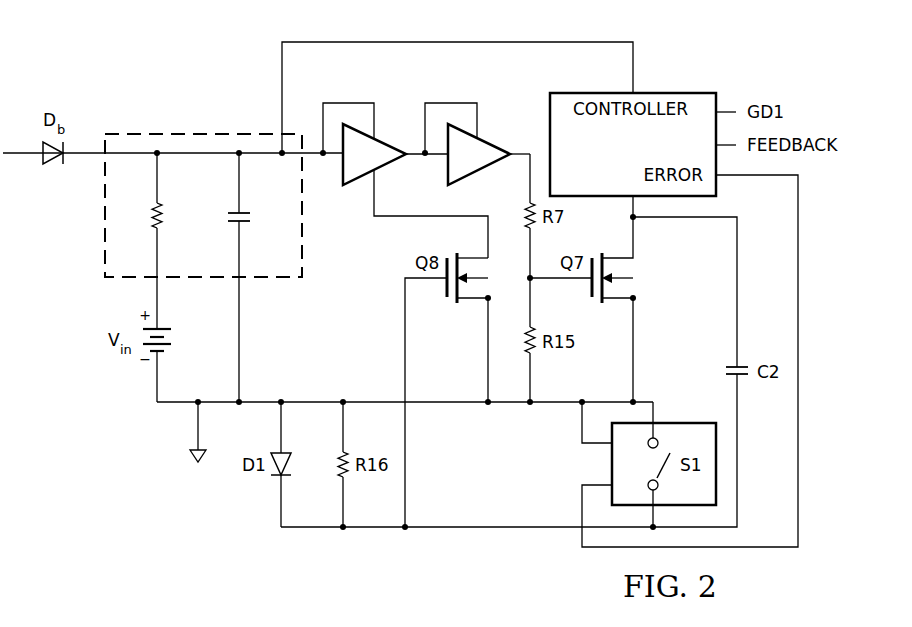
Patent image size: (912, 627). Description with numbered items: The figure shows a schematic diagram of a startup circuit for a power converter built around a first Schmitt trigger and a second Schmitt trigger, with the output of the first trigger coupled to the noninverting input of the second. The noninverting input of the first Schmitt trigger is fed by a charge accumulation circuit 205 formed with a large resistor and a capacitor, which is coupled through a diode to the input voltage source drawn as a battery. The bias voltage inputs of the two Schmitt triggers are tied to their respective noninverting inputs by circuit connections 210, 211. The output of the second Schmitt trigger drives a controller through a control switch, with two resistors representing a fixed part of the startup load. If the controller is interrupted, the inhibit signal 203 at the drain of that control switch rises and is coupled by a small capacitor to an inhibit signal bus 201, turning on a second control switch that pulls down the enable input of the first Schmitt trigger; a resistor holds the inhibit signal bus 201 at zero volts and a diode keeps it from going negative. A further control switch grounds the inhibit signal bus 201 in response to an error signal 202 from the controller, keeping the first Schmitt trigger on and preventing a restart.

The inhibit signal bus 201 is at (510, 527).
The error signal 202 is at (757, 177).
The inhibit signal 203 is at (685, 217).
The charge accumulation circuit 205 is at (190, 122).
The circuit connection 210 is at (350, 102).
The circuit connection 211 is at (453, 102).